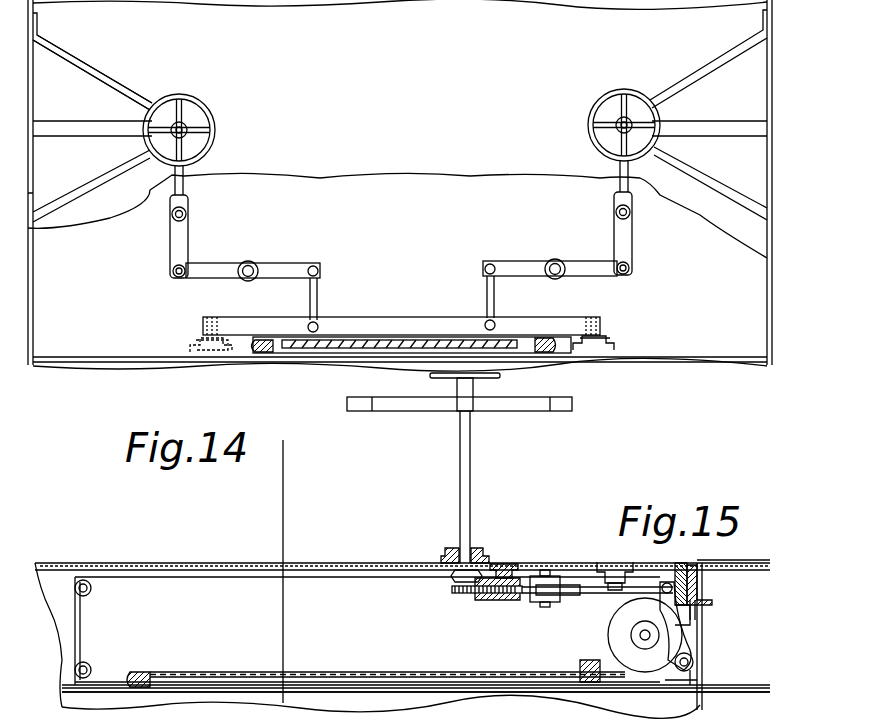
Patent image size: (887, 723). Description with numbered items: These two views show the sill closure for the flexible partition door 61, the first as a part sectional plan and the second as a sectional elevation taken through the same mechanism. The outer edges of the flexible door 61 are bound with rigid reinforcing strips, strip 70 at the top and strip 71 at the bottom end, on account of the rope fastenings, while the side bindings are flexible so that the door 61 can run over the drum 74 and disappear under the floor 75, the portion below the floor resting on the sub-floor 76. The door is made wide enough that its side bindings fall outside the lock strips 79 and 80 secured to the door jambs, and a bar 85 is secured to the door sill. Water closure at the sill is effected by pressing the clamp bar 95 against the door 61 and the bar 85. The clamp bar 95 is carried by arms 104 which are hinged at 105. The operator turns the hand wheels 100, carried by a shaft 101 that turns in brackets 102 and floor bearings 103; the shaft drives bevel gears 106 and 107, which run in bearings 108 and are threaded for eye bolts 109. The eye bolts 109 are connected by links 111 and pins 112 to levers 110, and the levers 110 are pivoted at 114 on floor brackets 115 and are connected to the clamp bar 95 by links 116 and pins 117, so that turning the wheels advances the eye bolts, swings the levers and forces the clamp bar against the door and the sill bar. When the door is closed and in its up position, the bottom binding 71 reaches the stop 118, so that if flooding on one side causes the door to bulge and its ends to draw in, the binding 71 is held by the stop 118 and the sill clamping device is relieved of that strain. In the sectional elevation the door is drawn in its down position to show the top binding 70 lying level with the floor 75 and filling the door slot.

In FIG. 15, the flexible door 61 is at (688, 615).
In FIG. 15, the top reinforcing strip 70 is at (681, 564).
In FIG. 15, the bottom reinforcing strip 71 is at (140, 670).
In FIG. 15, the drum 74 is at (608, 630).
In FIG. 15, the floor 75 is at (750, 562).
In FIG. 15, the sub-floor 76 is at (310, 693).
In FIG. 14, the lock strip 79 is at (285, 356).
In FIG. 14, the lock strip 80 is at (531, 356).
In FIG. 15, the bar 85 is at (705, 588).
In FIG. 14, the clamp bar 95 is at (440, 326).
In FIG. 15, the clamp bar 95 is at (686, 604).
In FIG. 14, the hand wheel 100 is at (210, 108).
In FIG. 15, the hand wheel 100 is at (430, 376).
In FIG. 14, the shaft 101 is at (190, 129).
In FIG. 15, the shaft 101 is at (472, 474).
In FIG. 14, the bracket 102 is at (105, 72).
In FIG. 15, the bracket 102 is at (572, 407).
In FIG. 15, the floor bearing 103 is at (475, 549).
In FIG. 15, the arm 104 is at (665, 648).
In FIG. 15, the hinge 105 is at (694, 665).
In FIG. 15, the bevel gear 106 is at (452, 576).
In FIG. 15, the bevel gear 107 is at (482, 602).
In FIG. 15, the bearing 108 is at (502, 565).
In FIG. 14, the eye bolt 109 is at (184, 185).
In FIG. 15, the eye bolt 109 is at (452, 590).
In FIG. 14, the lever 110 is at (216, 262).
In FIG. 14, the link 111 is at (170, 245).
In FIG. 14, the pin 112 is at (171, 213).
In FIG. 14, the pivot 114 is at (254, 264).
In FIG. 15, the floor bracket 115 is at (598, 565).
In FIG. 14, the link 116 is at (319, 292).
In FIG. 14, the pin 117 is at (320, 270).
In FIG. 15, the stop 118 is at (580, 660).